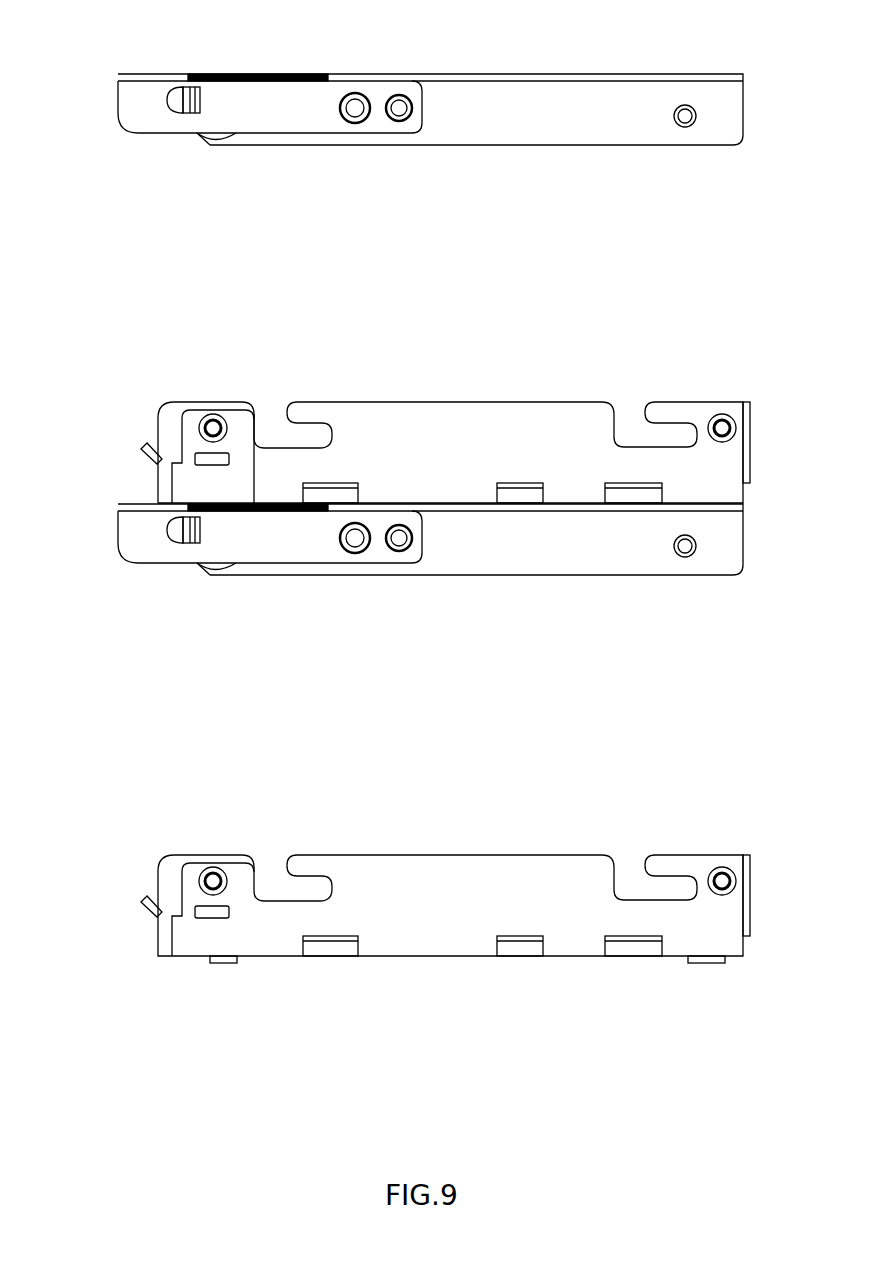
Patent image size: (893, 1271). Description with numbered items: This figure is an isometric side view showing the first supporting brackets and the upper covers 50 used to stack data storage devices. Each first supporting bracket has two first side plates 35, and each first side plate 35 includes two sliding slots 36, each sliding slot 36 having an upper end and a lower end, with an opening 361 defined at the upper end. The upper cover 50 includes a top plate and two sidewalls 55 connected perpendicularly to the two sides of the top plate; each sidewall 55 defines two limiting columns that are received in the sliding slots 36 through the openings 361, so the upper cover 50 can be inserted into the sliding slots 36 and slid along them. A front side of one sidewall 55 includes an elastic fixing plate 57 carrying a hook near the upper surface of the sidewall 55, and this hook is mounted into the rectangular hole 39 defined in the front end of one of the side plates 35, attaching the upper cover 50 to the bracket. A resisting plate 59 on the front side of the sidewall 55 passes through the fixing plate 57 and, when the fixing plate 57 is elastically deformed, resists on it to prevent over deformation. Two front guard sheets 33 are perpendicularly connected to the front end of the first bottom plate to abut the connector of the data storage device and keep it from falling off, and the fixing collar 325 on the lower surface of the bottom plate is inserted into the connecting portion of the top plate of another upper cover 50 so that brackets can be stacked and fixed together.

The upper cover 50 is at (486, 71).
The sidewall 55 is at (553, 114).
The elastic fixing plate 57 is at (292, 110).
The resisting plate 59 is at (172, 103).
The first side plate 35 is at (490, 412).
The sliding slot 36 is at (300, 437).
The opening 361 is at (263, 413).
The rectangular hole 39 is at (198, 905).
The front guard sheet 33 is at (150, 912).
The fixing collar 325 is at (223, 964).